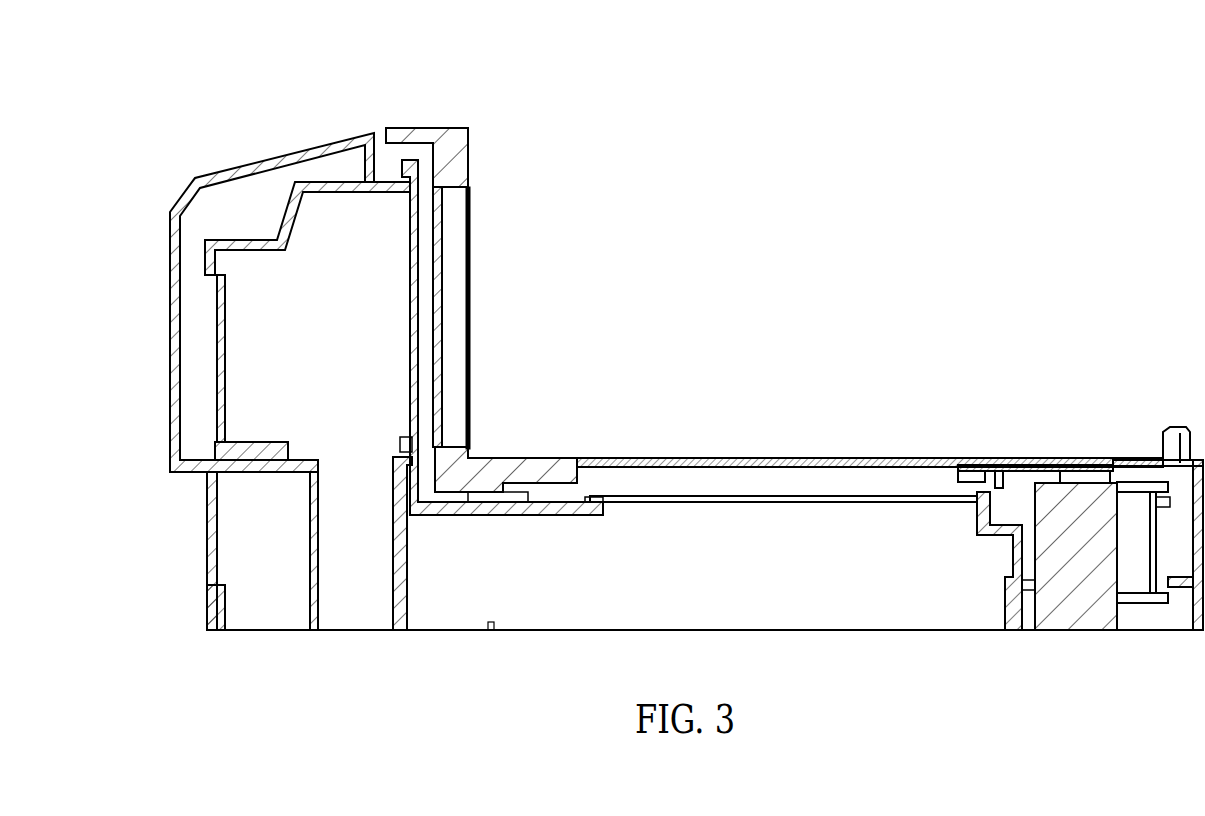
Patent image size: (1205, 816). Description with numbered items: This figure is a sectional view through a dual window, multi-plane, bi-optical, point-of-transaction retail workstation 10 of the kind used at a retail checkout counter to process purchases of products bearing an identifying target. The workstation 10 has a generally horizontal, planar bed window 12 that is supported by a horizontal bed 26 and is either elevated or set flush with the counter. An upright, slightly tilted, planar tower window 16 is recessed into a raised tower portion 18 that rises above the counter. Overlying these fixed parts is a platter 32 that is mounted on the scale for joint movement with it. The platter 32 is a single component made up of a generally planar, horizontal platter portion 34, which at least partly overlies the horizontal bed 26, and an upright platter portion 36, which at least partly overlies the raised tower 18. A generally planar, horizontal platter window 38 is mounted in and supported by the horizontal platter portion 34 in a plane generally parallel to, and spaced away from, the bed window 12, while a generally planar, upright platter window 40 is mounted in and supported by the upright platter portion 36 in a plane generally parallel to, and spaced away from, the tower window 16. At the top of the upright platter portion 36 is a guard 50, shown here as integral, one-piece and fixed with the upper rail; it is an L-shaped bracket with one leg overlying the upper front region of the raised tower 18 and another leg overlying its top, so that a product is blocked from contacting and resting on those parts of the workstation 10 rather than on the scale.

The retail workstation 10 is at (164, 91).
The bed window 12 is at (680, 503).
The tower window 16 is at (410, 378).
The raised tower portion 18 is at (172, 347).
The horizontal bed 26 is at (1073, 598).
The platter 32 is at (488, 448).
The horizontal platter portion 34 is at (1028, 462).
The upright platter portion 36 is at (457, 289).
The horizontal platter window 38 is at (770, 458).
The upright platter window 40 is at (433, 328).
The guard 50 is at (445, 133).